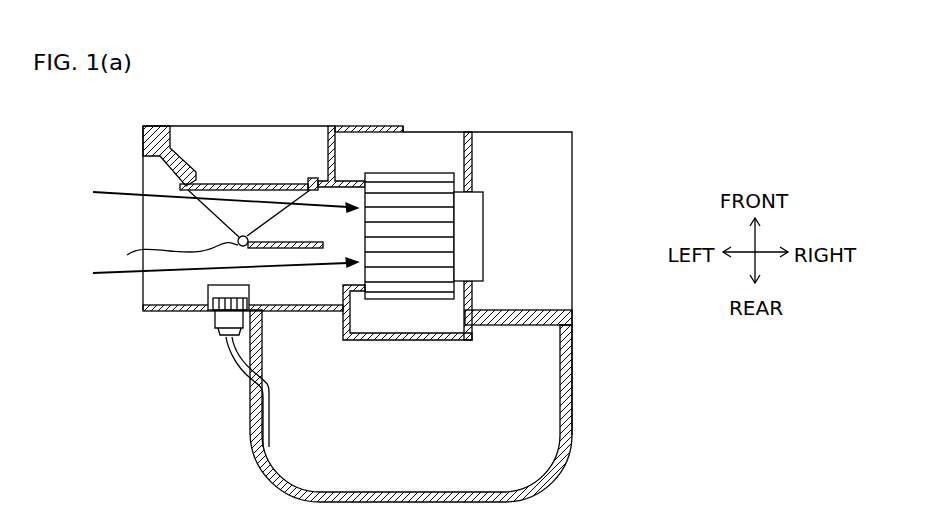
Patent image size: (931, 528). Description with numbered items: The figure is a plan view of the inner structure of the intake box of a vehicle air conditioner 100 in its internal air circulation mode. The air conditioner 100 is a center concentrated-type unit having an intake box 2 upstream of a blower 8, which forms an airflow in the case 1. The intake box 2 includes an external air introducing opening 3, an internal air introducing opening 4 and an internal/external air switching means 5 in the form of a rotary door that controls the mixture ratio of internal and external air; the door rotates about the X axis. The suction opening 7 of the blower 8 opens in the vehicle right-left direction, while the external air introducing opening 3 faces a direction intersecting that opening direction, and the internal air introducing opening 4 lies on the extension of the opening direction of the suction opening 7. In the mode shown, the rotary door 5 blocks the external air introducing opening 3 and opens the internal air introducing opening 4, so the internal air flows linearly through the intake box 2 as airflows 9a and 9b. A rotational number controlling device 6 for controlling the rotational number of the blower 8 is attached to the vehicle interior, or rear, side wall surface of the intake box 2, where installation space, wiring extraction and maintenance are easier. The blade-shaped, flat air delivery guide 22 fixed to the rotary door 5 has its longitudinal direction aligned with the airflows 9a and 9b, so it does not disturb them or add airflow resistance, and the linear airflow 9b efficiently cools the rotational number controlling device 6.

The vehicle air conditioner 100 is at (657, 82).
The case 1 is at (542, 132).
The intake box 2 is at (352, 126).
The external air introducing opening 3 is at (200, 126).
The internal air introducing opening 4 is at (142, 172).
The internal/external air switching means 5 is at (210, 223).
The rotational number controlling device 6 is at (209, 296).
The suction opening 7 is at (337, 276).
The blower 8 is at (430, 172).
The airflow of the internal air 9a is at (117, 194).
The airflow of the internal air 9b is at (117, 274).
The air delivery guide 22 is at (287, 240).
The X axis X is at (174, 255).